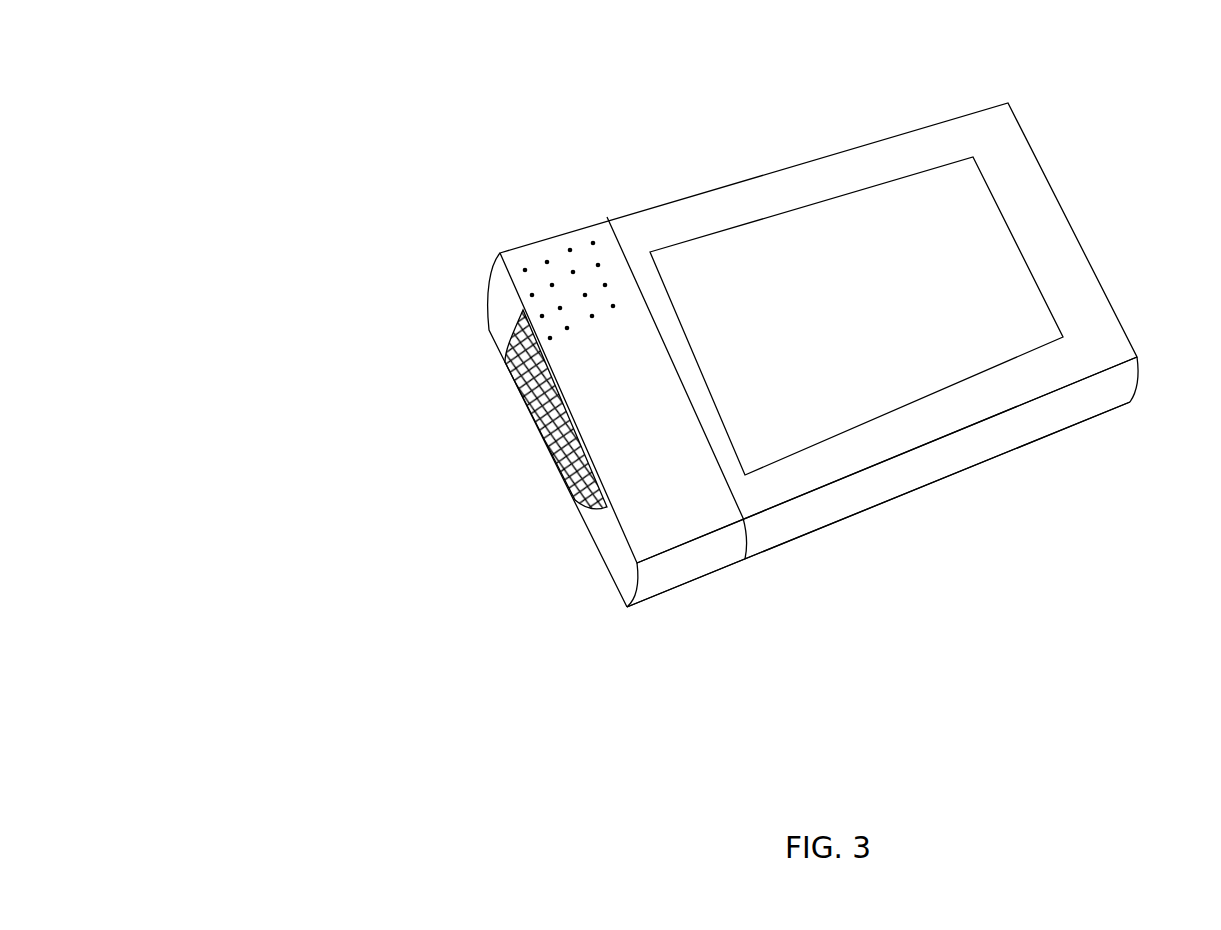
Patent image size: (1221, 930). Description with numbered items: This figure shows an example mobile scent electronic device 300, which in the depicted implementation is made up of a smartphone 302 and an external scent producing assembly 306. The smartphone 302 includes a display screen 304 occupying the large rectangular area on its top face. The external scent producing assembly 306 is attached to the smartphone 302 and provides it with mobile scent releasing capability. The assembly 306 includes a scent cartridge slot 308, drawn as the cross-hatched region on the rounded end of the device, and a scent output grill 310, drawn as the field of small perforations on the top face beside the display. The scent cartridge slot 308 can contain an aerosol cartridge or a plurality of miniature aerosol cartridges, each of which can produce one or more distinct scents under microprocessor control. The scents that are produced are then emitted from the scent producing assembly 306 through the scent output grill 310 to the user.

The mobile scent electronic device 300 is at (266, 55).
The smartphone 302 is at (805, 148).
The display screen 304 is at (945, 268).
The external scent producing assembly 306 is at (692, 568).
The scent cartridge slot 308 is at (535, 442).
The scent output grill 310 is at (553, 247).